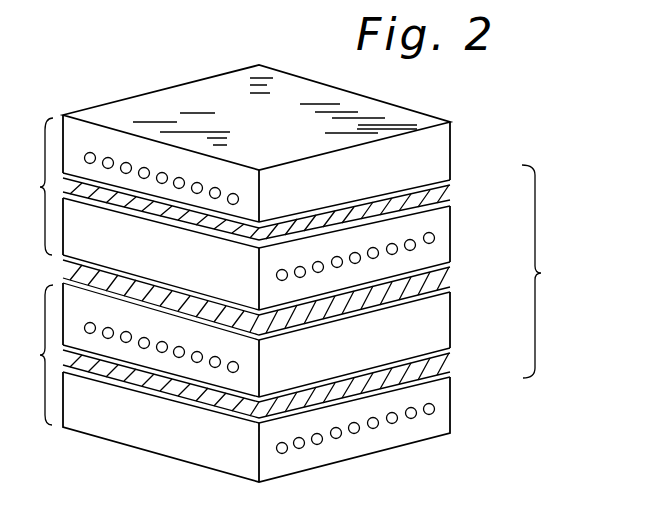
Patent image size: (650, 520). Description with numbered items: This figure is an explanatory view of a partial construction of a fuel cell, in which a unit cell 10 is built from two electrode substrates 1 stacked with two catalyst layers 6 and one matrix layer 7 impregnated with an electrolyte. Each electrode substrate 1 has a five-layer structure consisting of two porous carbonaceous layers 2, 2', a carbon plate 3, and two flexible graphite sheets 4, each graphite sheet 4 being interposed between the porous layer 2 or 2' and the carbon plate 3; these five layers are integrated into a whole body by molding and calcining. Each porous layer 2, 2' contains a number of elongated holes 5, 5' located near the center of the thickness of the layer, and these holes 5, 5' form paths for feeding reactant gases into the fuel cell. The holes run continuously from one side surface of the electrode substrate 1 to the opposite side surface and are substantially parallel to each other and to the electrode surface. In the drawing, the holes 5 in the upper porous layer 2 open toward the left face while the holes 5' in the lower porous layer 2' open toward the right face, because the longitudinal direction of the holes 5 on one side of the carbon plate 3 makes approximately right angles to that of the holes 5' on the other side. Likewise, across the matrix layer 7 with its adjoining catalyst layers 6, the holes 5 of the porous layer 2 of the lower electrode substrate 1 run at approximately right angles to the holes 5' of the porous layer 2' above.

The electrode substrate 1 is at (38, 271).
The porous carbonaceous layer 2 is at (280, 231).
The porous carbonaceous layer 2' is at (289, 340).
The carbon plate 3 is at (445, 195).
The flexible graphite sheet 4 is at (450, 178).
The elongated holes 5 is at (154, 274).
The elongated holes 5' is at (364, 330).
The catalyst layer 6 is at (450, 262).
The matrix layer 7 is at (445, 280).
The unit cell 10 is at (547, 271).